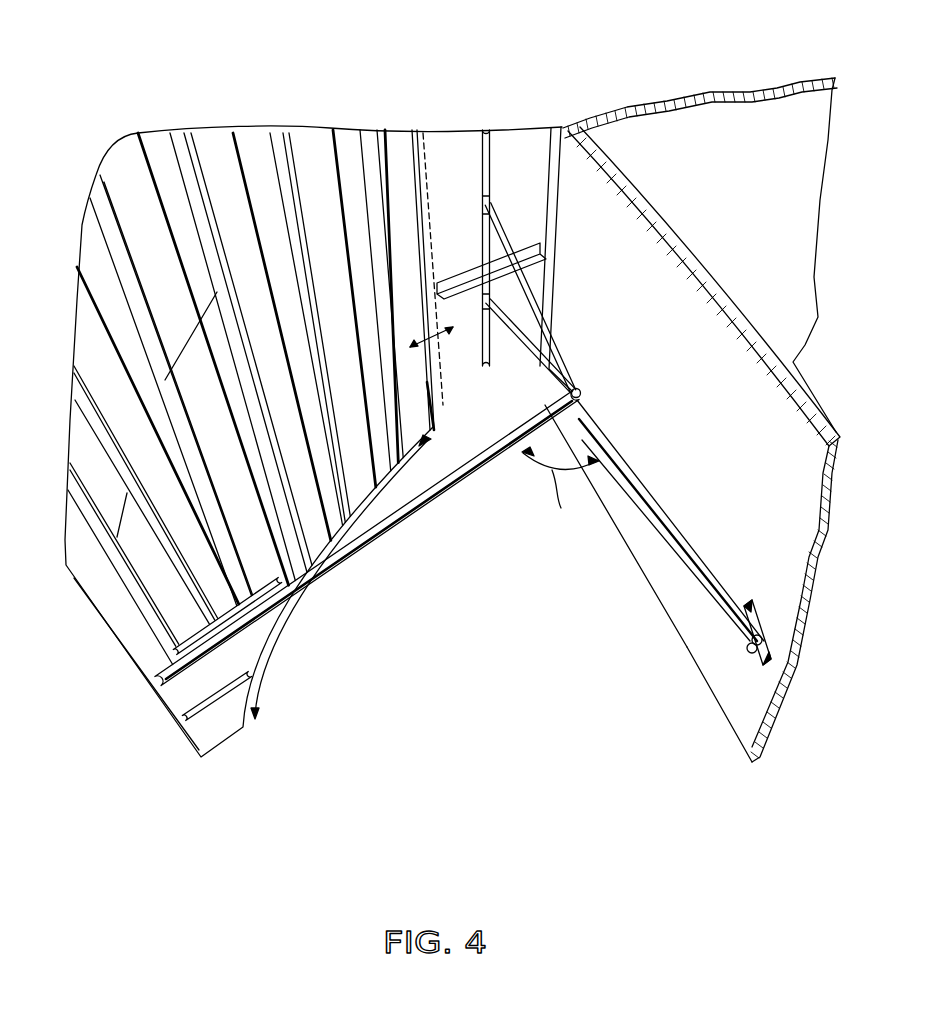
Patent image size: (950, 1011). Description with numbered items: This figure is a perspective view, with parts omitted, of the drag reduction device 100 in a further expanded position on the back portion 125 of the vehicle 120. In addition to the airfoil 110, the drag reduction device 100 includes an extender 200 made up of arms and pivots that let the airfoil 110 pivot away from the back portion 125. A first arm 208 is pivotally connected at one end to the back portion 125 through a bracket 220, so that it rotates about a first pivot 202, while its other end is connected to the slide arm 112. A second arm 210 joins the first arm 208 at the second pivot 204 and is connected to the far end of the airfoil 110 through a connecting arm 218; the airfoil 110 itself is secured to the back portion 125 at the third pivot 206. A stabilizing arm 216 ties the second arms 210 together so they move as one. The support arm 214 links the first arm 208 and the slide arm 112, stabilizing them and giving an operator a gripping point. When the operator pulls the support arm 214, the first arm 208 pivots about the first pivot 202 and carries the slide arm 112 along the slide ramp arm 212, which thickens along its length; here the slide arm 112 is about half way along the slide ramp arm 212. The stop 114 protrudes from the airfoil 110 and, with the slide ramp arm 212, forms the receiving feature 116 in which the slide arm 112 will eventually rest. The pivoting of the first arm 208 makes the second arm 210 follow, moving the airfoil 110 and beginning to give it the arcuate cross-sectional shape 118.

The drag reduction device 100 is at (178, 86).
The airfoil 110 is at (303, 128).
The slide arm 112 is at (489, 140).
The stop 114 is at (437, 405).
The receiving feature 116 is at (446, 355).
The arcuately cross-sectional shaped portion 118 is at (258, 668).
The vehicle 120 is at (746, 143).
The back portion 125 is at (691, 312).
The extender 200 is at (514, 472).
The first pivot 202 is at (752, 626).
The second pivot 204 is at (583, 394).
The third pivot 206 is at (540, 372).
The first arm 208 is at (726, 596).
The second arm 210 is at (375, 532).
The slide ramp arm 212 is at (540, 251).
The support arm 214 is at (547, 347).
The stabilizing arm 216 is at (172, 655).
The connecting arm 218 is at (182, 718).
The bracket 220 is at (760, 660).